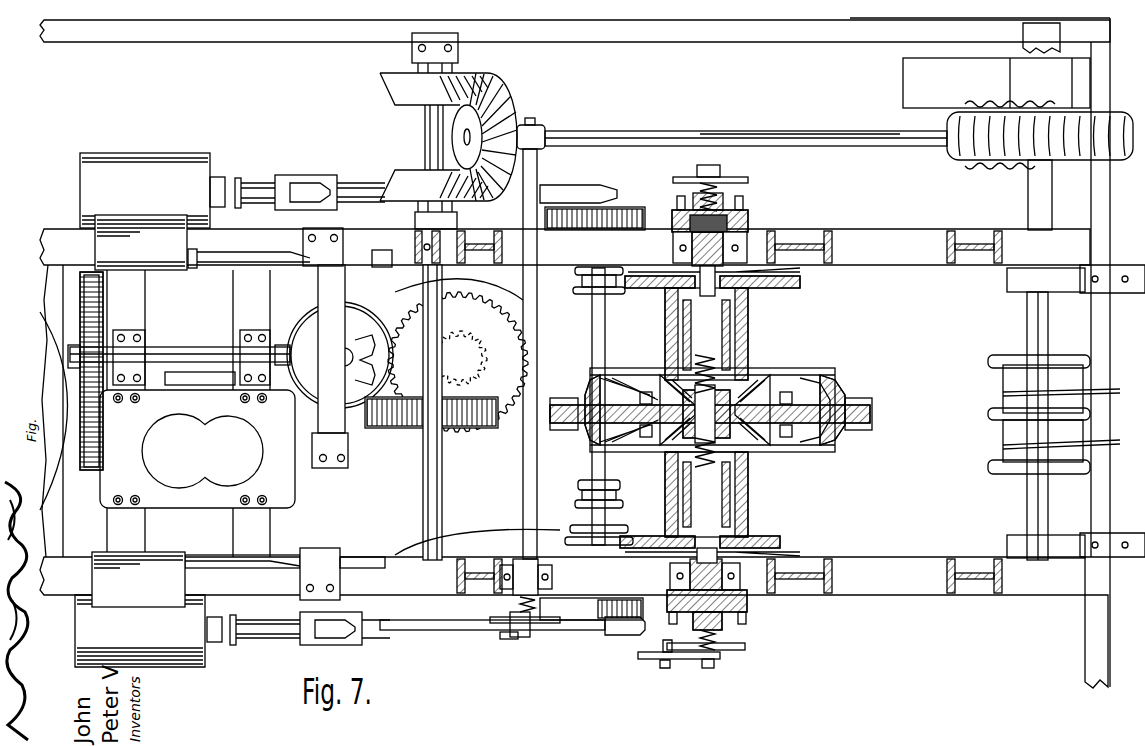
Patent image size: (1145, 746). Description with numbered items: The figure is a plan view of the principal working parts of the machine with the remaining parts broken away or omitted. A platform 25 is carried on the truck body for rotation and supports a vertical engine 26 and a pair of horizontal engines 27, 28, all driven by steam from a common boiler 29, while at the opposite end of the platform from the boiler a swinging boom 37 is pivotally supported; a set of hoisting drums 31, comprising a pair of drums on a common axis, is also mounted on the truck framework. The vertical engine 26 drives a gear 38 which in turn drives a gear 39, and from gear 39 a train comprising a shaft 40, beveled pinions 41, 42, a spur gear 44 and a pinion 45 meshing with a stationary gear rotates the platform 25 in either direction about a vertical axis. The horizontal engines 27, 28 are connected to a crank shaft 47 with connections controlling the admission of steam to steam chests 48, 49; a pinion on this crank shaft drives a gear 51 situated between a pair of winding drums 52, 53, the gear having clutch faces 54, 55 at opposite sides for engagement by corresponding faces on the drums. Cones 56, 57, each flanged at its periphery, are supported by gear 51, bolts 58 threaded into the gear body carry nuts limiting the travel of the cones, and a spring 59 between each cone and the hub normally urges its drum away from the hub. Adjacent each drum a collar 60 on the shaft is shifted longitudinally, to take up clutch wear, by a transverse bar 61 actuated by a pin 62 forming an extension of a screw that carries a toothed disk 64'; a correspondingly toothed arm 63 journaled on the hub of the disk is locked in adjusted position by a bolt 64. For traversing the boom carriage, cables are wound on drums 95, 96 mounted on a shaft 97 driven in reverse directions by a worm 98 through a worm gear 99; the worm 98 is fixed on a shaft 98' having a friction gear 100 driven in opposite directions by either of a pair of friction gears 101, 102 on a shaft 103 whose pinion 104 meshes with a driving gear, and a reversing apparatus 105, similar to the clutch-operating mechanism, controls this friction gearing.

The platform 25 is at (858, 585).
The vertical engine 26 is at (197, 473).
The horizontal engine 27 is at (180, 668).
The horizontal engine 28 is at (150, 160).
The boiler 29 is at (54, 411).
The set of hoisting drums 31 is at (806, 352).
The swinging boom 37 is at (1135, 290).
The gear 38 is at (90, 465).
The gear 39 is at (95, 385).
The shaft 40 is at (190, 347).
The beveled pinion 41 is at (290, 350).
The beveled pinion 42 is at (334, 348).
The spur gear 44 is at (505, 430).
The pinion 45 is at (478, 358).
The crank shaft 47 is at (592, 469).
The steam chest 48 is at (172, 555).
The steam chest 49 is at (168, 265).
The gear 51 is at (870, 410).
The winding drum 52 is at (748, 495).
The winding drum 53 is at (748, 320).
The clutch face 54 is at (836, 436).
The clutch face 55 is at (840, 390).
The cone 56 is at (758, 445).
The cone 57 is at (752, 380).
The bolts 58 is at (636, 445).
The spring 59 is at (680, 370).
The collar 60 is at (665, 295).
The transverse bar 61 is at (790, 272).
The pin 62 is at (747, 607).
The toothed arm 63 is at (700, 660).
The bolt 64 is at (657, 636).
The disk 64' is at (735, 661).
The drum 95 is at (1003, 455).
The drum 96 is at (1003, 393).
The shaft 97 is at (1027, 324).
The worm 98 is at (756, 166).
The shaft 98' is at (800, 115).
The worm gear 99 is at (1082, 160).
The friction gear 100 is at (506, 118).
The friction gear 101 is at (398, 90).
The friction gear 102 is at (396, 167).
The shaft 103 is at (423, 477).
The pinion 104 is at (398, 428).
The reversing apparatus 105 is at (532, 632).